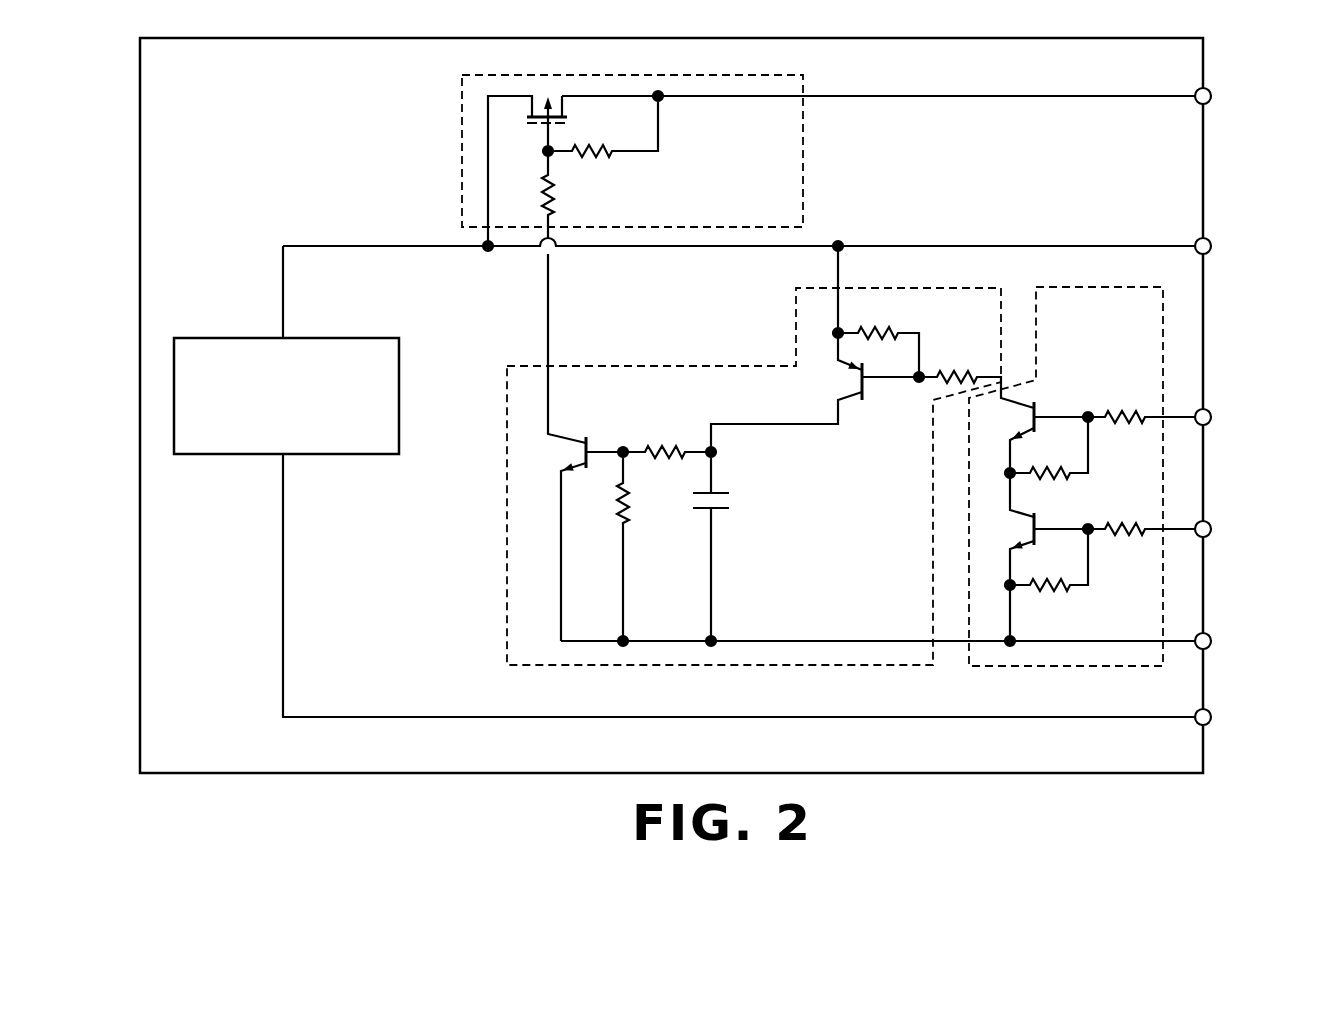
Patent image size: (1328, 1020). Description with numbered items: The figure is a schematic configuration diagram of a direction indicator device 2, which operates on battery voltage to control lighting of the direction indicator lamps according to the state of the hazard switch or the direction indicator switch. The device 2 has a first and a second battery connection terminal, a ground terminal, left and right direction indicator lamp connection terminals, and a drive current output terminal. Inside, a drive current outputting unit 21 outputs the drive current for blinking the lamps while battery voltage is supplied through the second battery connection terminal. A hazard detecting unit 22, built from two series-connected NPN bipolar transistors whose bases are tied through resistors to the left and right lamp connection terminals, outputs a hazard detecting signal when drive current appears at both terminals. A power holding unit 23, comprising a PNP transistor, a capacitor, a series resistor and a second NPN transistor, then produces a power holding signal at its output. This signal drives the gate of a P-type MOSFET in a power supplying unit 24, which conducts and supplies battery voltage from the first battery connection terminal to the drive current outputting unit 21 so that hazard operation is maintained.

The direction indicator device 2 is at (985, 38).
The drive current outputting unit 21 is at (347, 338).
The hazard detecting unit 22 is at (1082, 292).
The power holding unit 23 is at (672, 366).
The power supplying unit 24 is at (806, 150).